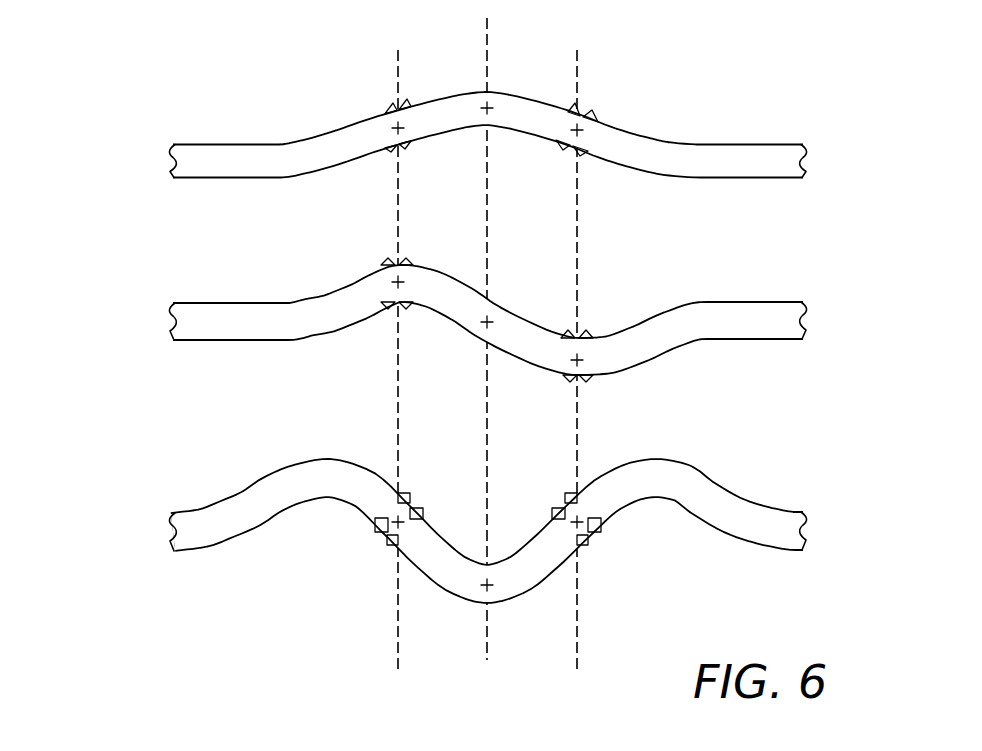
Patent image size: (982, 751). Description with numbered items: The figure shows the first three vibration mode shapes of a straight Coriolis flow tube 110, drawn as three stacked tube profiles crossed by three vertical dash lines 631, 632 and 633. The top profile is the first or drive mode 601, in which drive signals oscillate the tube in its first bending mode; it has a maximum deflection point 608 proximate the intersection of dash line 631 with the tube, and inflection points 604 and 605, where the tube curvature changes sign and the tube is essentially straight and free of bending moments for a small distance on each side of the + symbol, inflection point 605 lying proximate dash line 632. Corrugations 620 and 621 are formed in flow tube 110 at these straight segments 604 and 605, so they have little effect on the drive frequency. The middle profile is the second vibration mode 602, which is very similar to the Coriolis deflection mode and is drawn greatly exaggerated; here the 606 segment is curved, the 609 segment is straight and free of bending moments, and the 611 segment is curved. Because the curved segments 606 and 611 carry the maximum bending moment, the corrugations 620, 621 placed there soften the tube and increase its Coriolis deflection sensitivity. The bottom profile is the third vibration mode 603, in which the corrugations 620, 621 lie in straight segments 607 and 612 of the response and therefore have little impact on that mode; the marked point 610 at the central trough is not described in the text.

The flow tube 110 is at (432, 101).
The first or drive mode 601 is at (149, 162).
The second vibration mode 602 is at (149, 325).
The third vibration mode 603 is at (149, 540).
The inflection point 604 is at (391, 128).
The inflection point 605 is at (585, 131).
The curved segment 606 is at (392, 282).
The straight segment 607 is at (397, 519).
The maximum deflection point 608 is at (493, 105).
The straight segment 609 is at (490, 321).
The trough center point 610 is at (484, 584).
The curved segment 611 is at (588, 358).
The straight segment 612 is at (580, 521).
The corrugation 620 is at (396, 146).
The corrugation 621 is at (582, 152).
The dash line 631 is at (487, 55).
The dash line 632 is at (577, 75).
The dash line 633 is at (398, 70).